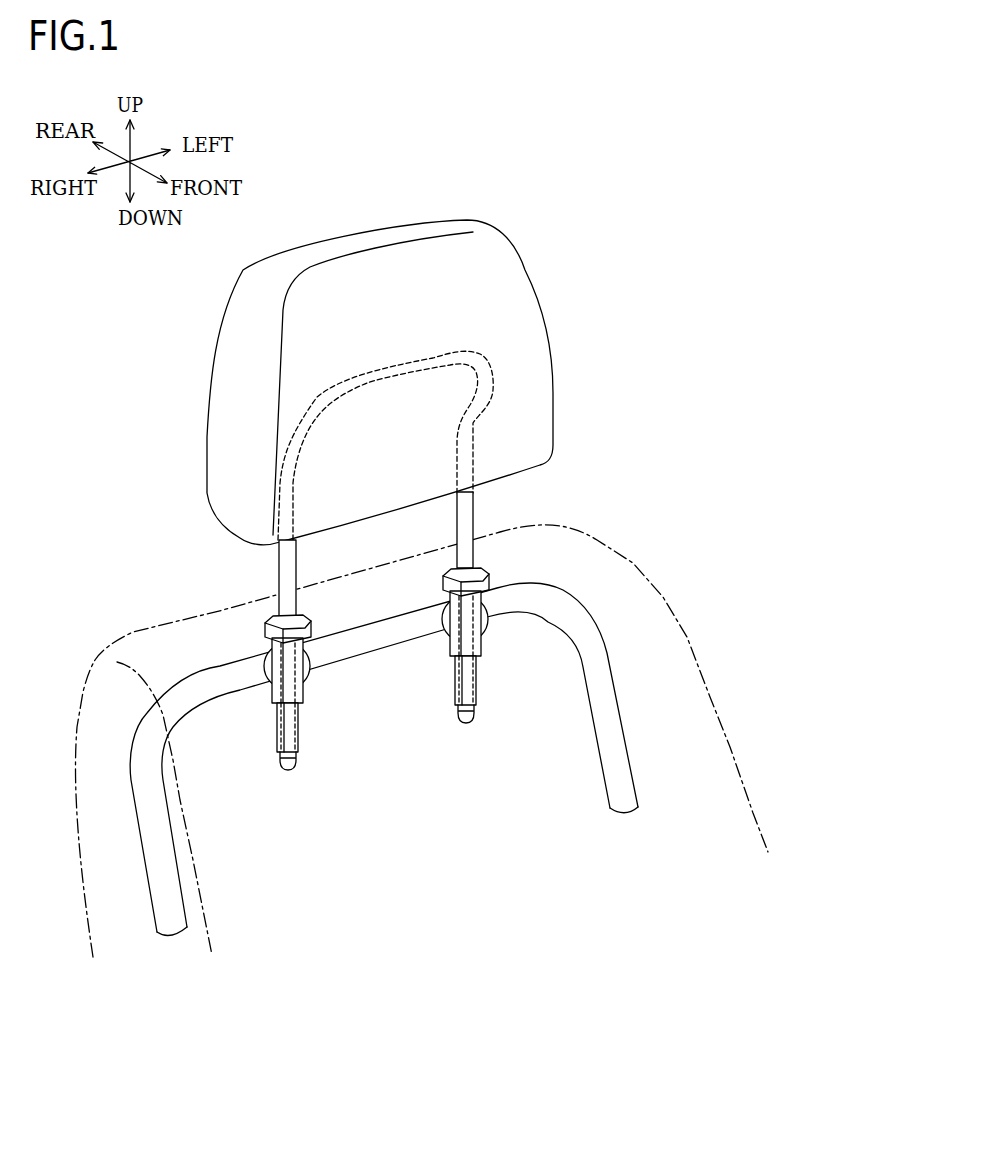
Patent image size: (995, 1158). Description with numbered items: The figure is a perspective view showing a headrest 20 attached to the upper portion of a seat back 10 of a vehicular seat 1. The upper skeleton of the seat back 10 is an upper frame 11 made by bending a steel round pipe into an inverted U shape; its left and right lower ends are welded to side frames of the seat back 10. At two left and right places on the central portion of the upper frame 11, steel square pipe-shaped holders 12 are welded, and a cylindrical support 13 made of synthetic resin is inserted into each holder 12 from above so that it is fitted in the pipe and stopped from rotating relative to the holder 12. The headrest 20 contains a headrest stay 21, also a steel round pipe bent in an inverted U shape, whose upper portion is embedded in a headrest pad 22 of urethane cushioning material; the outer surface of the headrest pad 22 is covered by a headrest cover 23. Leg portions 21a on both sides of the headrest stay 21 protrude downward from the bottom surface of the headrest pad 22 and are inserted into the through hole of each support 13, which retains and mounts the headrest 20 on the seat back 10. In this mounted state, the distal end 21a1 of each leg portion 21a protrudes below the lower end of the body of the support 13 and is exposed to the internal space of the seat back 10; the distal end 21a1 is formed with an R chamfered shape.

The vehicular seat 1 is at (661, 224).
The seat back 10 is at (629, 547).
The upper frame 11 is at (600, 667).
The holder 12 is at (298, 688).
The support 13 is at (300, 730).
The headrest 20 is at (496, 222).
The headrest stay 21 is at (473, 410).
The leg portion 21a is at (282, 573).
The distal end 21a1 is at (295, 768).
The headrest pad 22 is at (485, 300).
The headrest cover 23 is at (523, 352).